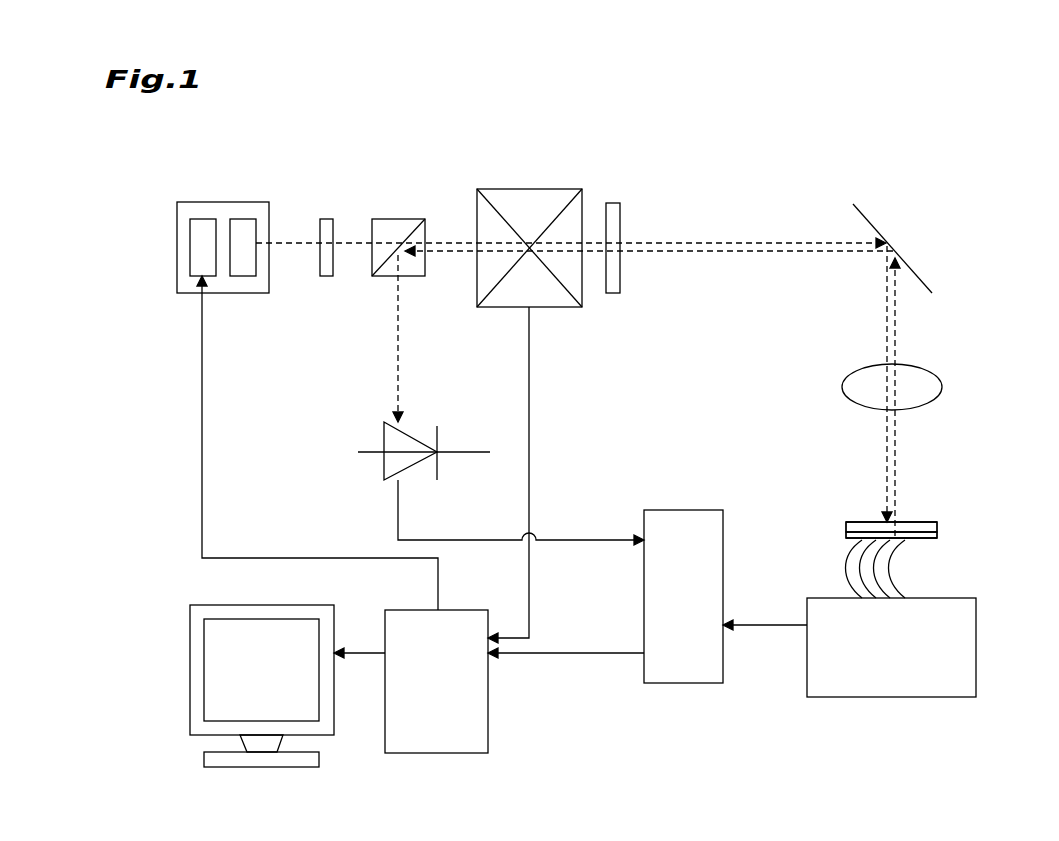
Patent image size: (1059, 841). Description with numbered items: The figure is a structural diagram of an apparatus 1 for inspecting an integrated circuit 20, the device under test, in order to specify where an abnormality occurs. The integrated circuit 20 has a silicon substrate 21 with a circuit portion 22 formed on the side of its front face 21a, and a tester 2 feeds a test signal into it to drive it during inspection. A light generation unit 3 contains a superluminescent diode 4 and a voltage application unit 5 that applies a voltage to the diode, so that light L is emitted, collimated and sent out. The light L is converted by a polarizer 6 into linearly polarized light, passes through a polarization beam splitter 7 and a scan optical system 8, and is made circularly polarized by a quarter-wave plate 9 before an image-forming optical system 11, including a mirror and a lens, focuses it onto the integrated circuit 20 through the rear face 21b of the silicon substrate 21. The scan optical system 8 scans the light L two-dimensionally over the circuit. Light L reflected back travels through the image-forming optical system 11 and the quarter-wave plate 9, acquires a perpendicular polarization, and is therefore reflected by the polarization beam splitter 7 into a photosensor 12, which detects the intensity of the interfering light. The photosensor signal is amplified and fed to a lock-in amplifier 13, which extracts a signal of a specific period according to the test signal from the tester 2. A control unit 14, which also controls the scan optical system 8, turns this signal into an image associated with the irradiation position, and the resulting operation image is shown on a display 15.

The apparatus for inspecting an integrated circuit 1 is at (800, 180).
The tester 2 is at (976, 645).
The light generation unit 3 is at (177, 246).
The superluminescent diode 4 is at (240, 219).
The voltage application unit 5 is at (200, 219).
The polarizer 6 is at (327, 219).
The polarization beam splitter 7 is at (396, 219).
The scan optical system 8 is at (528, 189).
The quarter-wave plate 9 is at (612, 203).
The image-forming optical system 11 is at (943, 207).
The photosensor 12 is at (384, 438).
The lock-in amplifier 13 is at (680, 683).
The control unit 14 is at (438, 753).
The display 15 is at (190, 668).
The integrated circuit 20 is at (946, 524).
The silicon substrate 21 is at (850, 527).
The front face 21a is at (928, 539).
The rear face 21b is at (912, 522).
The circuit portion 22 is at (850, 535).
The light L is at (398, 318).